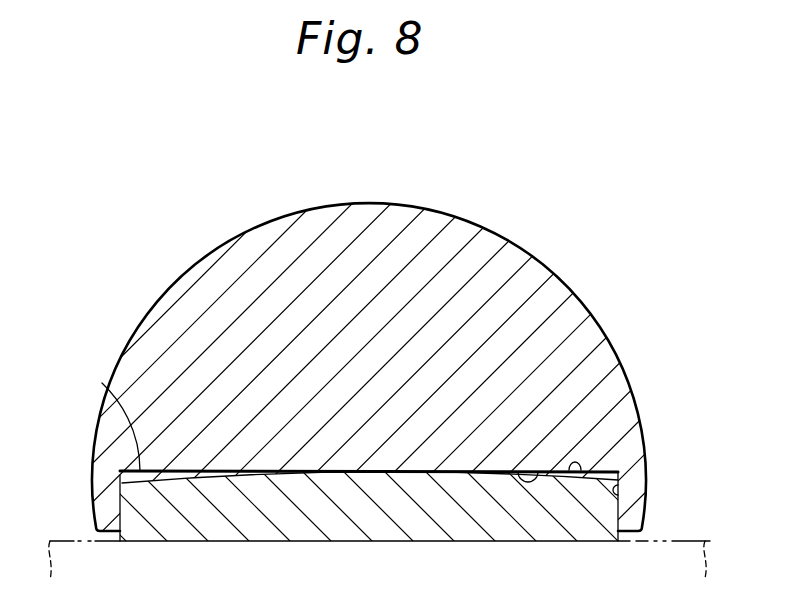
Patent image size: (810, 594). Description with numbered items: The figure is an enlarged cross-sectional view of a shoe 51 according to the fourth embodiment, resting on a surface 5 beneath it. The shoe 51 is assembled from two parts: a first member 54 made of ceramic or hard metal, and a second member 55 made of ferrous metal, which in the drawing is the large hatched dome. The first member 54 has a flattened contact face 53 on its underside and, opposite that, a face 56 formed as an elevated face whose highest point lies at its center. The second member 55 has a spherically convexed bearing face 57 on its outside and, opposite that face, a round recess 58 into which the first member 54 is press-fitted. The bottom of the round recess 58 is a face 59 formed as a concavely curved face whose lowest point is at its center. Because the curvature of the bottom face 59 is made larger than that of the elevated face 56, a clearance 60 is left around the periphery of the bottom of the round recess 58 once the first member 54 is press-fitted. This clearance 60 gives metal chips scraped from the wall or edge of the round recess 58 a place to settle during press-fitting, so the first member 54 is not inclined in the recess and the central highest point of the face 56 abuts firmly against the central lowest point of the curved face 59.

The mounting surface 5 is at (682, 538).
The shoe 51 is at (405, 360).
The flattened contact face 53 is at (273, 543).
The first member 54 is at (205, 524).
The second member 55 is at (189, 290).
The face of the first member 56 is at (577, 467).
The spherically convexed bearing face 57 is at (520, 243).
The round recess 58 is at (616, 490).
The face of the second member 59 is at (518, 468).
The clearance 60 is at (124, 416).